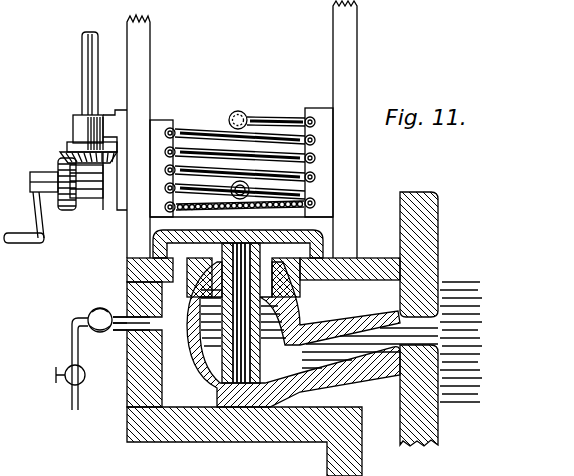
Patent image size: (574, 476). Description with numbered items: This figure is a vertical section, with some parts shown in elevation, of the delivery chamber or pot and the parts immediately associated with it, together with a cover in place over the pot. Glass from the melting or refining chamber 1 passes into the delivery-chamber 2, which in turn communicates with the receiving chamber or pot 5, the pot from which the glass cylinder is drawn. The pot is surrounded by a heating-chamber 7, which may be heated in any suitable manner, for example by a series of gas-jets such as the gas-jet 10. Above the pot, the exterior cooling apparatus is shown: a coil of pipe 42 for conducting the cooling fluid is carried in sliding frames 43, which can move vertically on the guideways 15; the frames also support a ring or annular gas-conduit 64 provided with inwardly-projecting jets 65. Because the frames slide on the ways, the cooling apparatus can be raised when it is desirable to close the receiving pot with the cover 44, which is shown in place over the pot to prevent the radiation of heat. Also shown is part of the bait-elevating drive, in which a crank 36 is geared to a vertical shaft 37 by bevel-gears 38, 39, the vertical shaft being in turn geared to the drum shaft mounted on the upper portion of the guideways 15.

The melting or refining chamber 1 is at (264, 475).
The delivery-chamber 2 is at (341, 326).
The receiving chamber or pot 5 is at (243, 313).
The heating-chamber 7 is at (285, 334).
The gas-jet 10 is at (104, 310).
The guideways 15 is at (149, 62).
The crank 36 is at (16, 243).
The vertical shaft 37 is at (82, 70).
The bevel-gear 38 is at (60, 175).
The bevel-gear 39 is at (71, 130).
The coil of pipe 42 is at (251, 114).
The sliding frames 43 is at (156, 131).
The cover 44 is at (316, 240).
The ring or annular gas-conduit 64 is at (163, 208).
The inwardly-projecting jets 65 is at (300, 193).